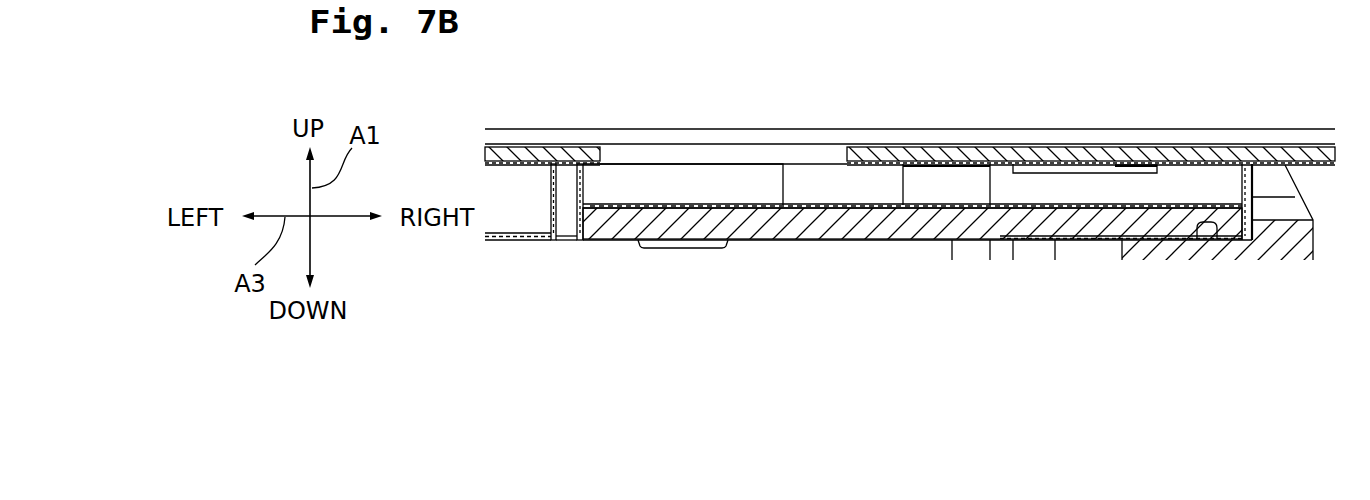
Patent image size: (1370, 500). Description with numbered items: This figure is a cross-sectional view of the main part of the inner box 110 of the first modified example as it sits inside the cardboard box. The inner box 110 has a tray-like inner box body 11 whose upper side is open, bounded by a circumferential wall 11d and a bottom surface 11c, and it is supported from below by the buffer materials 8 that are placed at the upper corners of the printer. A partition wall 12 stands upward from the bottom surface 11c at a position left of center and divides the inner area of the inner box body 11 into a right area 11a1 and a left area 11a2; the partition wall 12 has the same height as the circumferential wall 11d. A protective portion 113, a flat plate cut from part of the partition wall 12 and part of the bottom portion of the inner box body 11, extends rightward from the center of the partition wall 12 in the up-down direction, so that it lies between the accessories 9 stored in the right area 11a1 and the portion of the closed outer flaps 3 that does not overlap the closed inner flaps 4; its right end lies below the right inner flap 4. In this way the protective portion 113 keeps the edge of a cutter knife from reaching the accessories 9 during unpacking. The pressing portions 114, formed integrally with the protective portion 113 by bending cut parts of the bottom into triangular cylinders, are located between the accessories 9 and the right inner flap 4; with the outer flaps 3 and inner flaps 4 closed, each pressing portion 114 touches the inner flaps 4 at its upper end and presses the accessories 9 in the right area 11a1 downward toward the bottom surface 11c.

The outer flap 3 is at (1165, 138).
The inner flap 4 is at (513, 152).
The buffer material 8 is at (1285, 242).
The accessories 9 is at (1137, 230).
The inner box body 11 is at (669, 266).
The right area 11a1 is at (1080, 182).
The left area 11a2 is at (513, 223).
The bottom surface 11c is at (1215, 227).
The circumferential wall 11d is at (1245, 187).
The partition wall 12 is at (581, 188).
The inner box 110 is at (723, 180).
The protective portion 113 is at (822, 208).
The pressing portion 114 is at (790, 0).